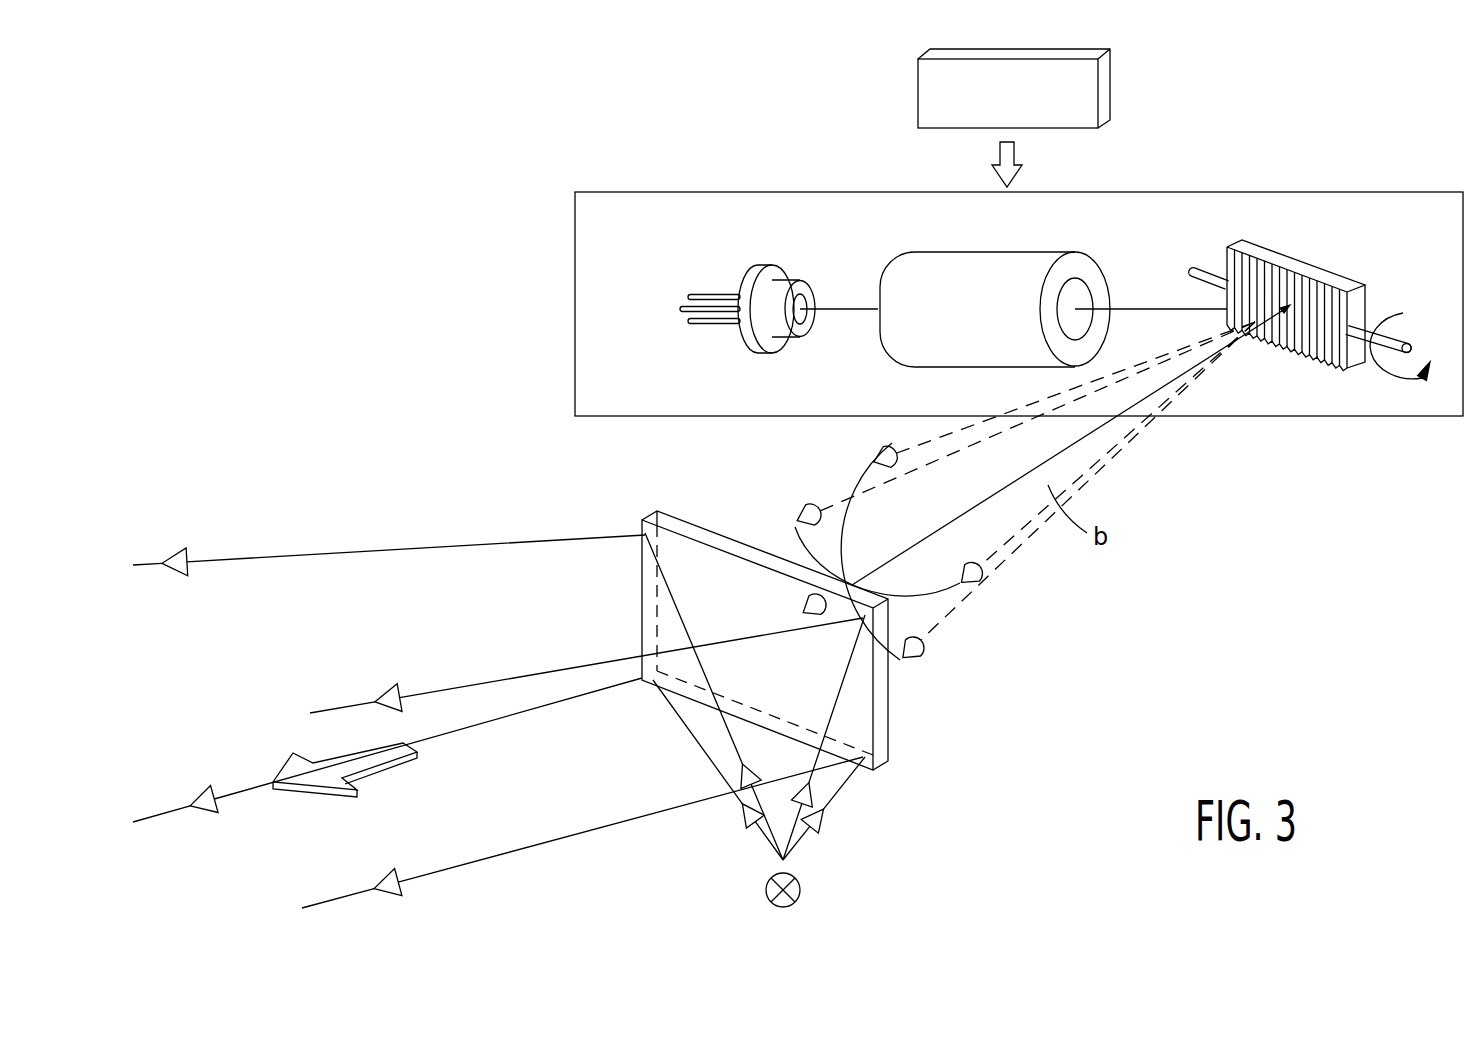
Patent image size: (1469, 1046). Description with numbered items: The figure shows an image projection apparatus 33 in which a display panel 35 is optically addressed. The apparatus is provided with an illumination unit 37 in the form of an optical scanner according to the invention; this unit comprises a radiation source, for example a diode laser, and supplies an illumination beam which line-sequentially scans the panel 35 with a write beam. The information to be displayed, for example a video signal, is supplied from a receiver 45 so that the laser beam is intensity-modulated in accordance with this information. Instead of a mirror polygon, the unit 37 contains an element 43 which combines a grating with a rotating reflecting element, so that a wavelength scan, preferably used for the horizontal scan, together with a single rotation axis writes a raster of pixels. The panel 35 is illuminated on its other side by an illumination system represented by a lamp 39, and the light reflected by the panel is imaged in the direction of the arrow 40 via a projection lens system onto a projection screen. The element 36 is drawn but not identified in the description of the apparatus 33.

The image projection apparatus 33 is at (402, 290).
The display panel 35 is at (888, 718).
The laser diode 36 is at (770, 270).
The illumination unit 37 is at (1265, 418).
The lamp 39 is at (765, 887).
The arrow 40 is at (377, 759).
The element 43 is at (1340, 280).
The receiver 45 is at (1082, 99).